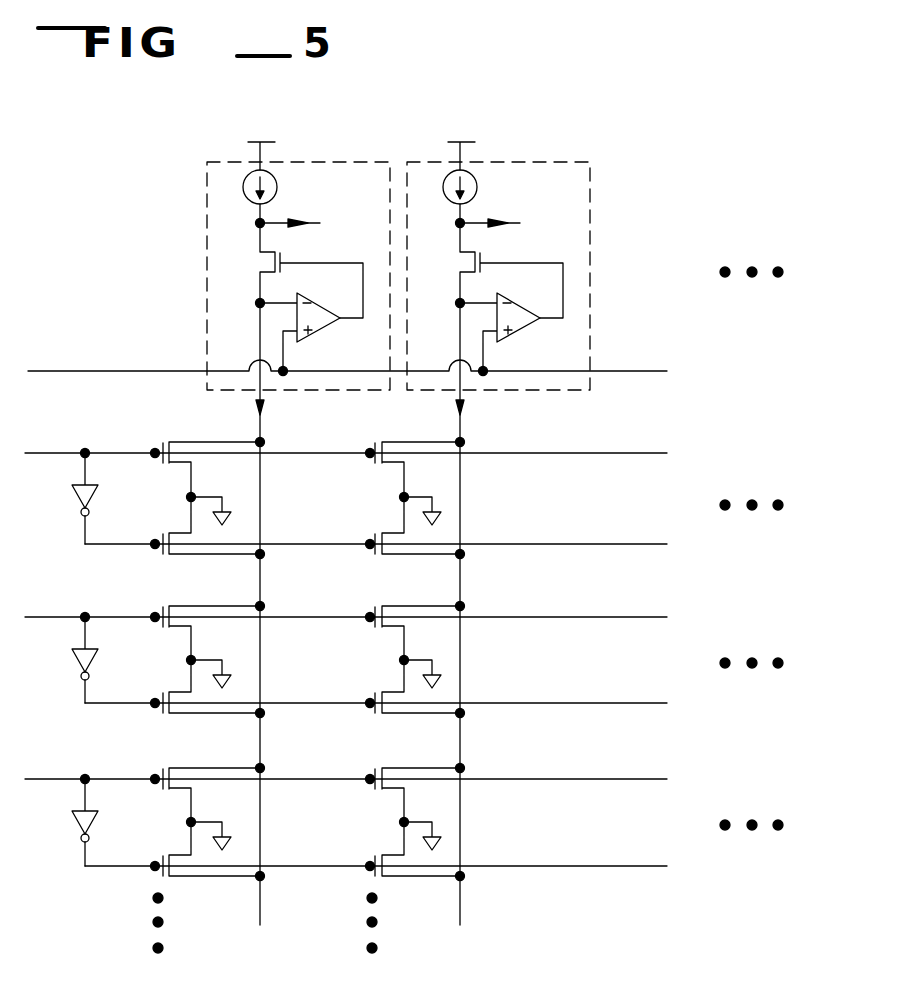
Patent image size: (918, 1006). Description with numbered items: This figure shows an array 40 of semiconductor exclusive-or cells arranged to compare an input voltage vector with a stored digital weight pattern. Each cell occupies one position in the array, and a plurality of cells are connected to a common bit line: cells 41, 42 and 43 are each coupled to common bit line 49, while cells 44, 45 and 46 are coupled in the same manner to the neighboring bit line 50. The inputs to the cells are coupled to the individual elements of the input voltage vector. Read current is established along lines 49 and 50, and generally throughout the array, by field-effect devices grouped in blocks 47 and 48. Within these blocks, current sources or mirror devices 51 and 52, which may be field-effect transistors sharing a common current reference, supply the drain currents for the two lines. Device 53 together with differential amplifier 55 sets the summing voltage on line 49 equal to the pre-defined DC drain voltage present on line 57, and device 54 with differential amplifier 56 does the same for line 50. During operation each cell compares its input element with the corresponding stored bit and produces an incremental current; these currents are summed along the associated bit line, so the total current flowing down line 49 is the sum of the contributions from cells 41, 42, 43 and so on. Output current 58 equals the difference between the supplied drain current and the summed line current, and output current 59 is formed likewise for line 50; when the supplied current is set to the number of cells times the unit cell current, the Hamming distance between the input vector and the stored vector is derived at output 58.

The array 40 is at (370, 120).
The cell 41 is at (172, 436).
The cell 42 is at (165, 600).
The cell 43 is at (166, 762).
The cell 44 is at (385, 436).
The cell 45 is at (379, 600).
The cell 46 is at (379, 762).
The block 47 is at (348, 158).
The block 48 is at (504, 160).
The common bit line 49 is at (262, 505).
The bit line 50 is at (462, 505).
The current source 51 is at (276, 196).
The current source 52 is at (476, 196).
The device 53 is at (262, 262).
The device 54 is at (462, 262).
The differential amplifier 55 is at (320, 333).
The differential amplifier 56 is at (520, 333).
The line 57 is at (117, 370).
The output current 58 is at (276, 222).
The output current 59 is at (476, 222).